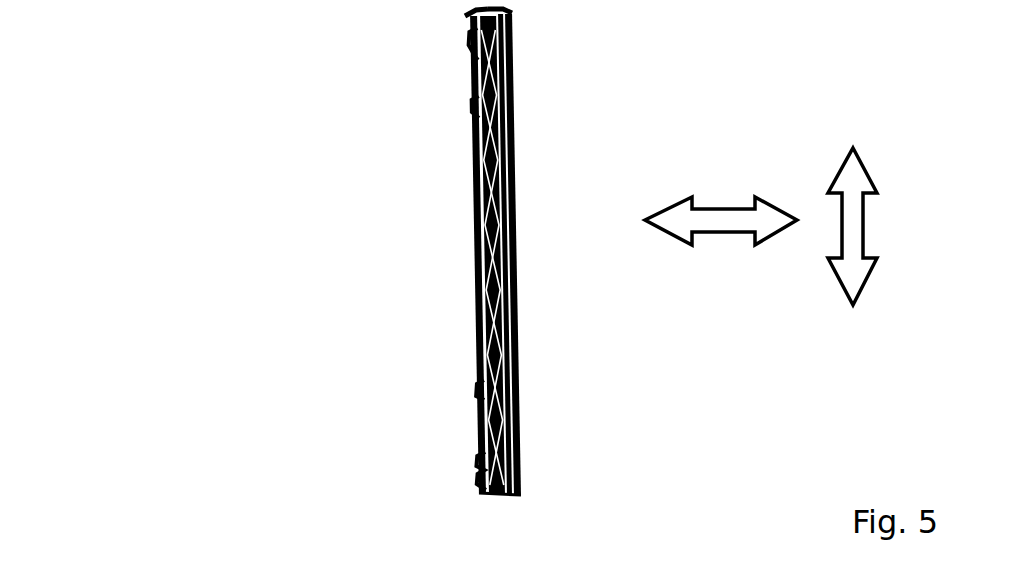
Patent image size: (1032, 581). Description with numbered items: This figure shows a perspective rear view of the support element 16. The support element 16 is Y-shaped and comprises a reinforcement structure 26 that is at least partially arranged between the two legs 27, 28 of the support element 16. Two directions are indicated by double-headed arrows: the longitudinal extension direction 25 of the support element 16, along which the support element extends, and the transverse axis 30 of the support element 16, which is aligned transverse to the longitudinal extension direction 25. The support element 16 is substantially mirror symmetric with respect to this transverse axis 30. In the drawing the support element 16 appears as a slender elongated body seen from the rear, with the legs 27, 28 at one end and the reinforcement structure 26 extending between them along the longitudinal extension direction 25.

The support element 16 is at (148, 52).
The longitudinal extension direction 25 is at (858, 187).
The reinforcement structure 26 is at (482, 348).
The leg 27 is at (467, 15).
The leg 28 is at (507, 13).
The transverse axis 30 is at (731, 222).